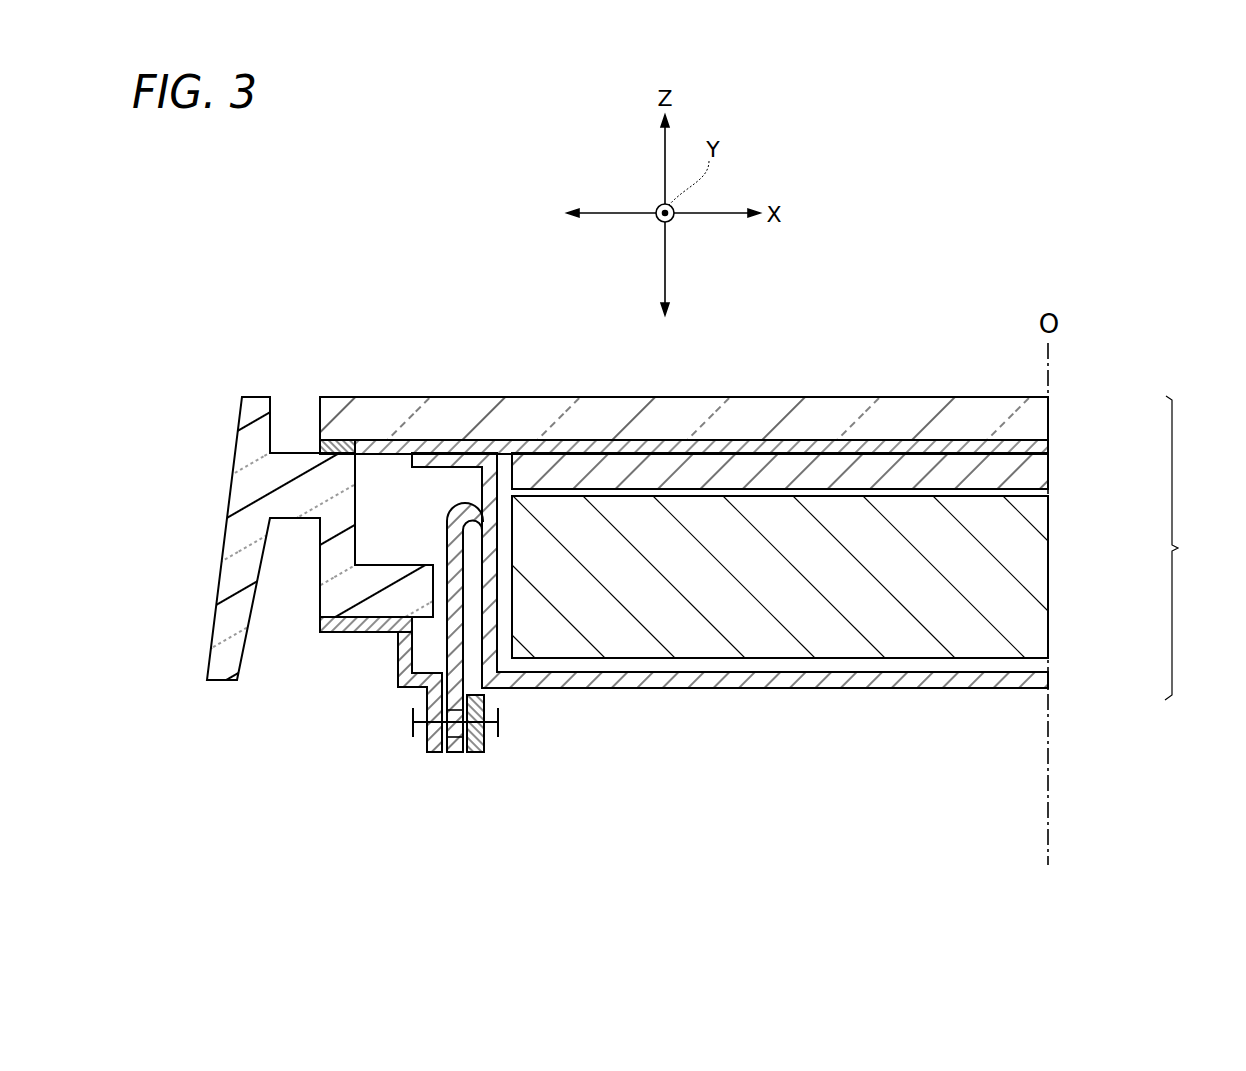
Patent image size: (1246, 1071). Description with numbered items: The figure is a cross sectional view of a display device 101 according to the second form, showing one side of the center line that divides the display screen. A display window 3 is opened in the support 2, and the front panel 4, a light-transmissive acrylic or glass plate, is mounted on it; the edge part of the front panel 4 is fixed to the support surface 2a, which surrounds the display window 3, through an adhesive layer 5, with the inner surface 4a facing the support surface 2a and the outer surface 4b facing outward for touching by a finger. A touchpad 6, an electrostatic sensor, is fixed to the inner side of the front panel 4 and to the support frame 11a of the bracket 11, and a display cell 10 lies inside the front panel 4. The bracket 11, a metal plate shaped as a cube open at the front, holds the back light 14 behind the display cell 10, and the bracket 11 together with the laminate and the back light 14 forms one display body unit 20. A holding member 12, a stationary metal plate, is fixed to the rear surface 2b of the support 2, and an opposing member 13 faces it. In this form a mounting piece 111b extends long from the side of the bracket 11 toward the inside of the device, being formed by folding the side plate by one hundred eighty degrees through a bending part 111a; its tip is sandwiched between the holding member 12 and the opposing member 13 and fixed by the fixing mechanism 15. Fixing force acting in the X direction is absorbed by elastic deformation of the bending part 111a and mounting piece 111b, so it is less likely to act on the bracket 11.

The support 2 is at (250, 489).
The support surface 2a is at (297, 447).
The rear surface 2b is at (350, 605).
The display window 3 is at (379, 460).
The front panel 4 is at (880, 415).
The inner surface 4a is at (736, 446).
The outer surface 4b is at (605, 396).
The adhesive layer 5 is at (334, 440).
The touchpad 6 is at (1050, 447).
The display cell 10 is at (1033, 478).
The bracket 11 is at (780, 700).
The support frame 11a is at (433, 462).
The holding member 12 is at (400, 656).
The opposing member 13 is at (487, 742).
The back light 14 is at (1033, 580).
The fixing mechanism 15 is at (439, 770).
The display body unit 20 is at (1190, 548).
The display device 101 is at (977, 287).
The bending part 111a is at (468, 505).
The mounting piece 111b is at (468, 627).